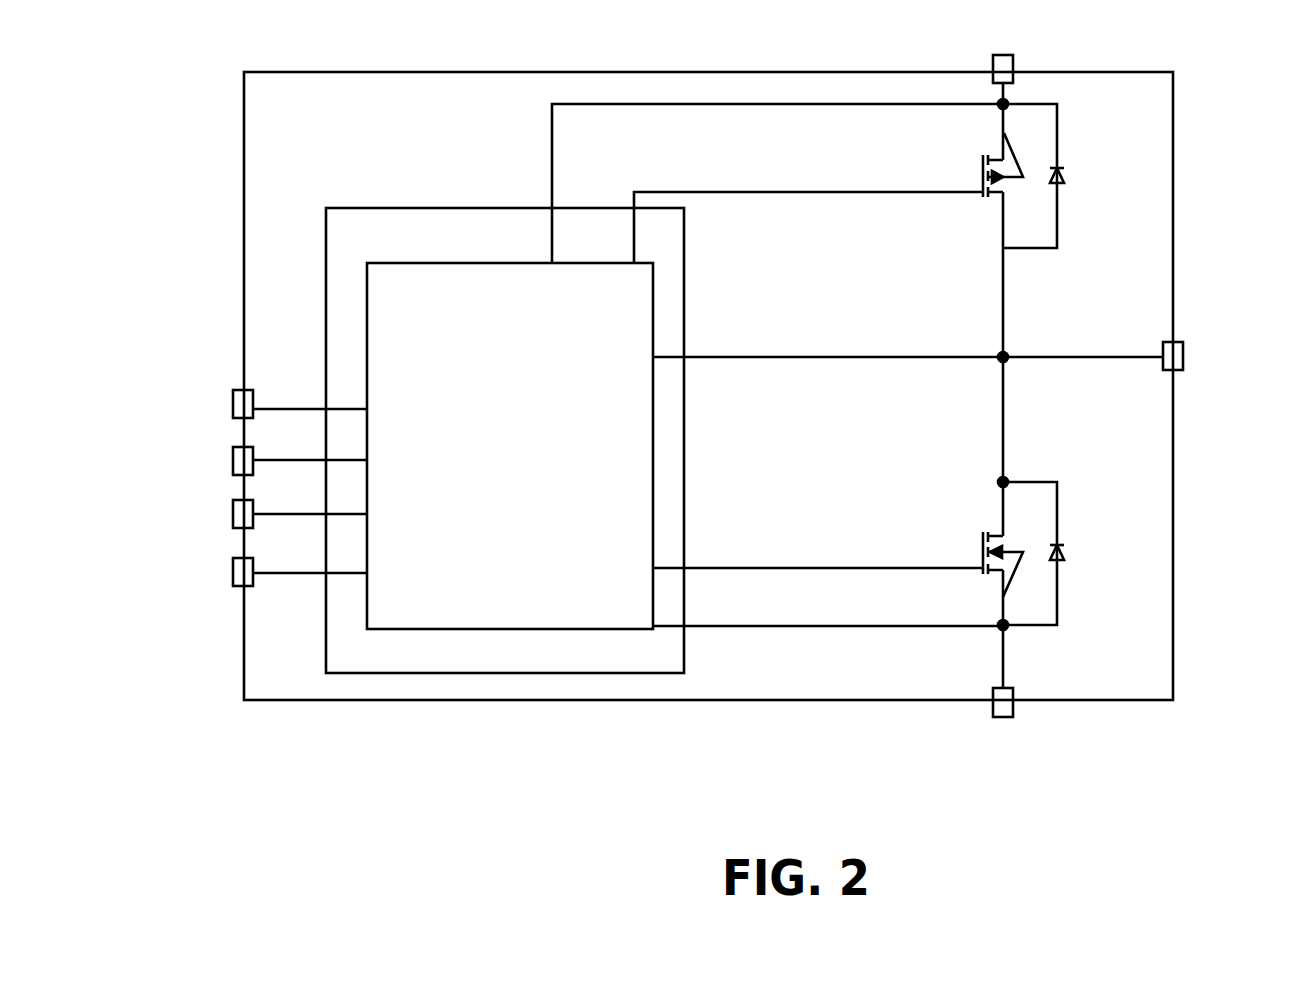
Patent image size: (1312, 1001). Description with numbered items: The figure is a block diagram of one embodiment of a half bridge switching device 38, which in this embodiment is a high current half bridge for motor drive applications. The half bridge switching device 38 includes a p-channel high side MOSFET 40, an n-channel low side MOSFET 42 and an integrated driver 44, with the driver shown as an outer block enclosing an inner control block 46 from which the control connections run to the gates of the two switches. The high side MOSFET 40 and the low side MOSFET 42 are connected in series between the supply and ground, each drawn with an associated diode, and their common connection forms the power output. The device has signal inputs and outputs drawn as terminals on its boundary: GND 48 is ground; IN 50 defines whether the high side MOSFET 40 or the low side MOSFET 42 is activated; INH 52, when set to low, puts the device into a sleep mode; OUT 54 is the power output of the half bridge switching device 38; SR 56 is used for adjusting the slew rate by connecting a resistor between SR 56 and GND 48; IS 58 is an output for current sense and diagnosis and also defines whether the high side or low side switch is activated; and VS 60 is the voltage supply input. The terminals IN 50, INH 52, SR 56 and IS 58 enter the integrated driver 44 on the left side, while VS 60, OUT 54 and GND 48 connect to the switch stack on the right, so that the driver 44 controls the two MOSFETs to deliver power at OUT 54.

The half bridge switching device 38 is at (236, 66).
The p-channel high side MOSFET 40 is at (1010, 129).
The n-channel low side MOSFET 42 is at (1012, 506).
The integrated driver 44 is at (312, 249).
The control logic block 46 is at (367, 355).
The GND 48 is at (1003, 717).
The IN 50 is at (233, 405).
The INH 52 is at (233, 466).
The OUT 54 is at (1183, 355).
The SR 56 is at (233, 519).
The IS 58 is at (233, 571).
The VS 60 is at (1010, 57).